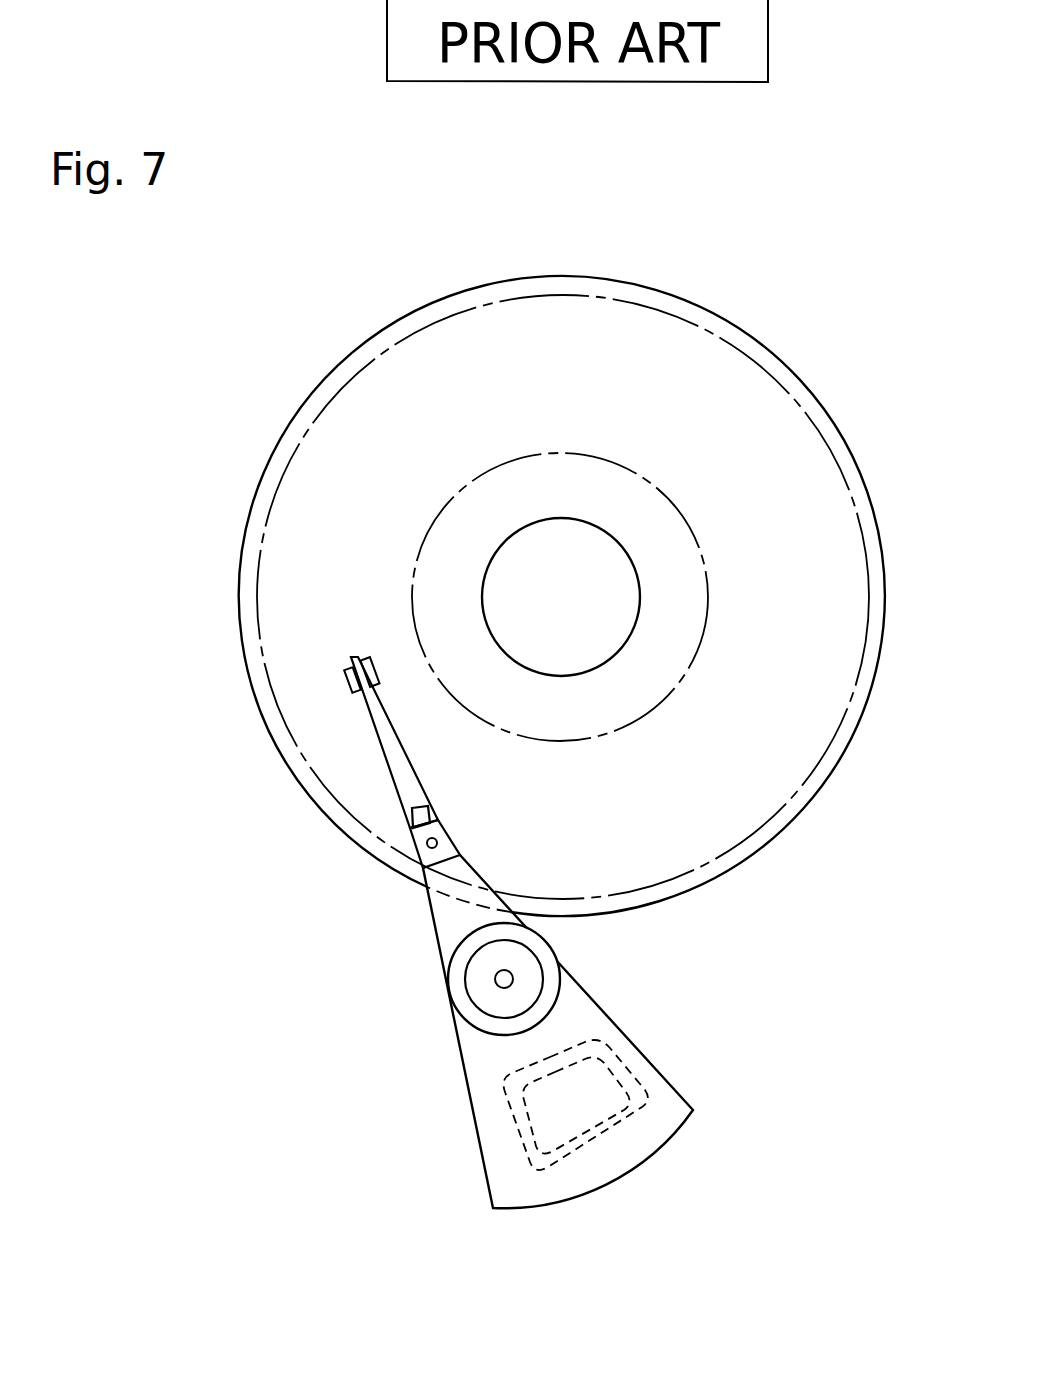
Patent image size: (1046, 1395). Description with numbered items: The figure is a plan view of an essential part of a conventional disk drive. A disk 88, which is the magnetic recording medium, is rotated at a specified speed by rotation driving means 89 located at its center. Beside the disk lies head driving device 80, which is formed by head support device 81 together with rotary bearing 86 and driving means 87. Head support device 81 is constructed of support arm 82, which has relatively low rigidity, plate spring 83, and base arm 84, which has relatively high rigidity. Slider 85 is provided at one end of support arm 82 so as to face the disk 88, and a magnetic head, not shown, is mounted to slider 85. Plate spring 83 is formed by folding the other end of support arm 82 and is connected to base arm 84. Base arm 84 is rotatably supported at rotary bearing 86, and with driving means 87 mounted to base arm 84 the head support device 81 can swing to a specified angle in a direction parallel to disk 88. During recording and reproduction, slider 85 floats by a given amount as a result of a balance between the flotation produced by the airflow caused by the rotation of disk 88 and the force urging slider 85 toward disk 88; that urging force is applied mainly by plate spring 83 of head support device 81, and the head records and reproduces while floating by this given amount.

The head driving device 80 is at (202, 1249).
The head support device 81 is at (224, 993).
The support arm 82 is at (367, 708).
The plate spring 83 is at (412, 822).
The base arm 84 is at (433, 921).
The slider 85 is at (348, 683).
The rotary bearing 86 is at (451, 998).
The driving means 87 is at (503, 1123).
The disk 88 is at (320, 510).
The rotation driving means 89 is at (498, 548).